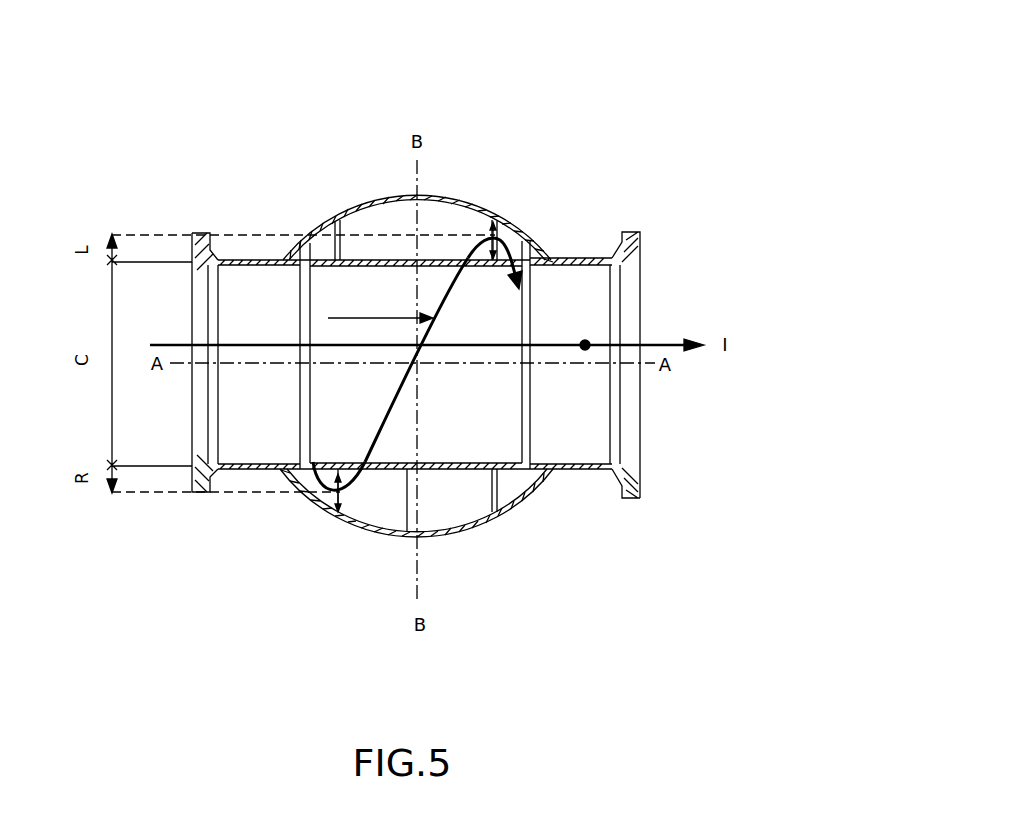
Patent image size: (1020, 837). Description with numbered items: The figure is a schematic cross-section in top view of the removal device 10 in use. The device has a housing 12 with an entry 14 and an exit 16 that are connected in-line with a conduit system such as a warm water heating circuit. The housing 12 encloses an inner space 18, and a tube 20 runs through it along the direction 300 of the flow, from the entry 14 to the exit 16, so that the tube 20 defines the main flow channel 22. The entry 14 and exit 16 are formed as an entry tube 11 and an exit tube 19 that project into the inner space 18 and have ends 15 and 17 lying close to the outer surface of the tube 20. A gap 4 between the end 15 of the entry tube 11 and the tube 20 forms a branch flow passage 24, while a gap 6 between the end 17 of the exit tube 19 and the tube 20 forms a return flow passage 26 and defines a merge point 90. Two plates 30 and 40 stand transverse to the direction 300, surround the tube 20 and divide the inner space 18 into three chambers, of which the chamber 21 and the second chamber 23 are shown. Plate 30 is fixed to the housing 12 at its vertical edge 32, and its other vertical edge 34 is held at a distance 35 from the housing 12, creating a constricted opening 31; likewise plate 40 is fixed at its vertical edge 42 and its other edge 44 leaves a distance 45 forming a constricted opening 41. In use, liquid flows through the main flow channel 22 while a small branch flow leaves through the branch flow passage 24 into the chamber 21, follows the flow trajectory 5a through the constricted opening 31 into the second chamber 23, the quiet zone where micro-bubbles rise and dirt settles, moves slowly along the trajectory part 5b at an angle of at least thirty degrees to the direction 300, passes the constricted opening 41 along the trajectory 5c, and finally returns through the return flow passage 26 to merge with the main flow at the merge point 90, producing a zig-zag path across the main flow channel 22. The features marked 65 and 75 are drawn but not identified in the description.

The removal device 10 is at (628, 85).
The entry tube 11 is at (232, 482).
The housing 12 is at (310, 235).
The entry 14 is at (192, 303).
The end of entry tube 15 is at (302, 305).
The exit 16 is at (640, 440).
The end of exit tube 17 is at (532, 415).
The inner space 18 is at (369, 254).
The exit tube 19 is at (588, 472).
The tube 20 is at (400, 535).
The chamber 21 is at (325, 245).
The main flow channel 22 is at (476, 439).
The second chamber 23 is at (438, 506).
The branch flow passage 24 is at (300, 233).
The return flow passage 26 is at (592, 242).
The plate 30 is at (376, 198).
The constricted opening 31 is at (350, 497).
The vertical edge of plate 30 32 is at (333, 228).
The vertical edge of plate 30 34 is at (314, 482).
The distance 35 is at (355, 493).
The plate 40 is at (530, 485).
The constricted opening 41 is at (487, 228).
The vertical edge of plate 40 42 is at (497, 518).
The vertical edge of plate 40 44 is at (560, 243).
The distance 45 is at (490, 238).
The lower partition 65 is at (340, 492).
The outlet opening 75 is at (505, 250).
The merge point 90 is at (585, 345).
The direction of the flow 300 is at (380, 308).
The gap 4 is at (313, 374).
The flow trajectory 5a is at (340, 468).
The trajectory part 5b is at (390, 428).
The flow trajectory 5c is at (478, 250).
The gap 6 is at (530, 330).